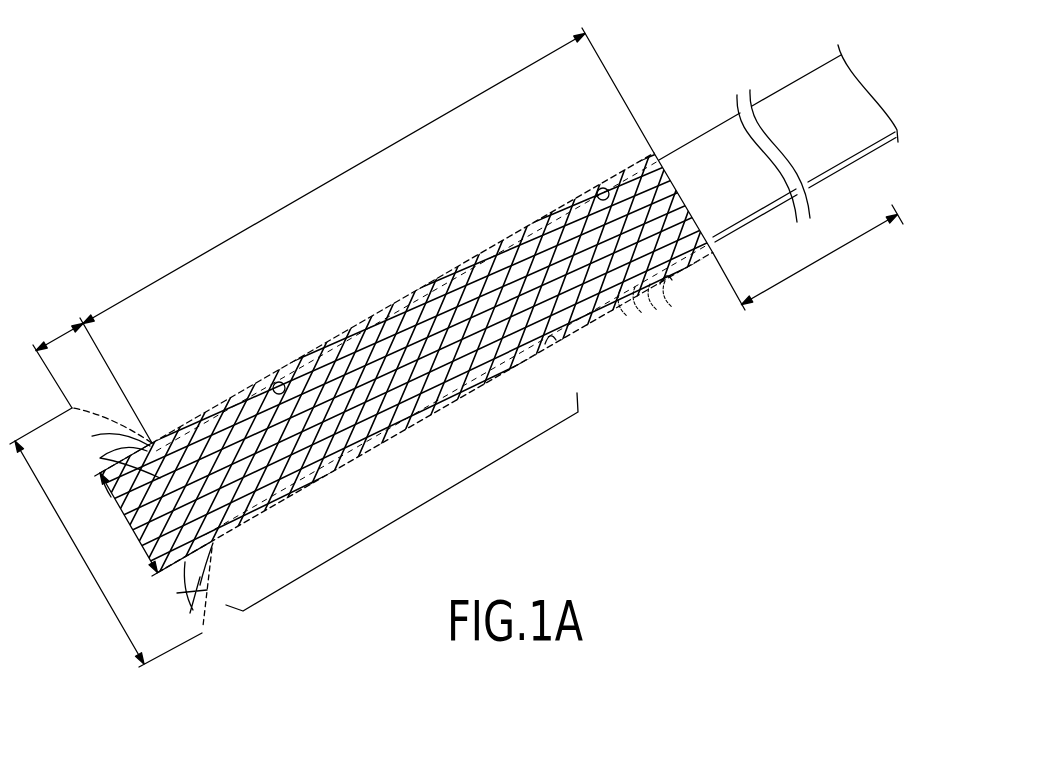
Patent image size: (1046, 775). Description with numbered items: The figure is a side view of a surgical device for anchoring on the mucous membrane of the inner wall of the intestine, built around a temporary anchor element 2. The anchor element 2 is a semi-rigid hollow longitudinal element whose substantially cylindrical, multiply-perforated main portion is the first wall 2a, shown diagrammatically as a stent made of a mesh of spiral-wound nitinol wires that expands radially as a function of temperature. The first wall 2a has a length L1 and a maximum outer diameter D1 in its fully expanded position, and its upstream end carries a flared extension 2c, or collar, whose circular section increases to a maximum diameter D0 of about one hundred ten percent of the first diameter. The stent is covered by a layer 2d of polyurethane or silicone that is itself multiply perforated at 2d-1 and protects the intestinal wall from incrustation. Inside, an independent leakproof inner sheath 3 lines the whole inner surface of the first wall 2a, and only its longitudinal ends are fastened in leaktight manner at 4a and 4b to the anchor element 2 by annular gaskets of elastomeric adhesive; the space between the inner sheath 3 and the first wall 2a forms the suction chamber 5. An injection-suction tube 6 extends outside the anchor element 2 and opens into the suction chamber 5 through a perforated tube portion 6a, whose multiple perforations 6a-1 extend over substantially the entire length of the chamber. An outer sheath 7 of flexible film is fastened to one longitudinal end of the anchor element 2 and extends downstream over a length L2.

The temporary anchor element 2 is at (409, 514).
The first wall 2a is at (352, 415).
The flared extension 2c is at (210, 587).
The layer 2d is at (495, 385).
The perforations of the layer 2d-1 is at (615, 323).
The inner sheath 3 is at (274, 378).
The leaktight fastening 4a is at (713, 240).
The leaktight fastening 4b is at (153, 440).
The suction chamber 5 is at (602, 188).
The injection-suction tube 6 is at (836, 178).
The perforated tube portion 6a is at (666, 278).
The perforations of the tube portion 6a-1 is at (550, 338).
The outer sheath 7 is at (713, 133).
The length of the first wall L1 is at (343, 235).
The maximum diameter of the flared extension D0 is at (106, 537).
The maximum outer diameter of the first wall D1 is at (152, 509).
The length of the outer sheath L2 is at (808, 257).